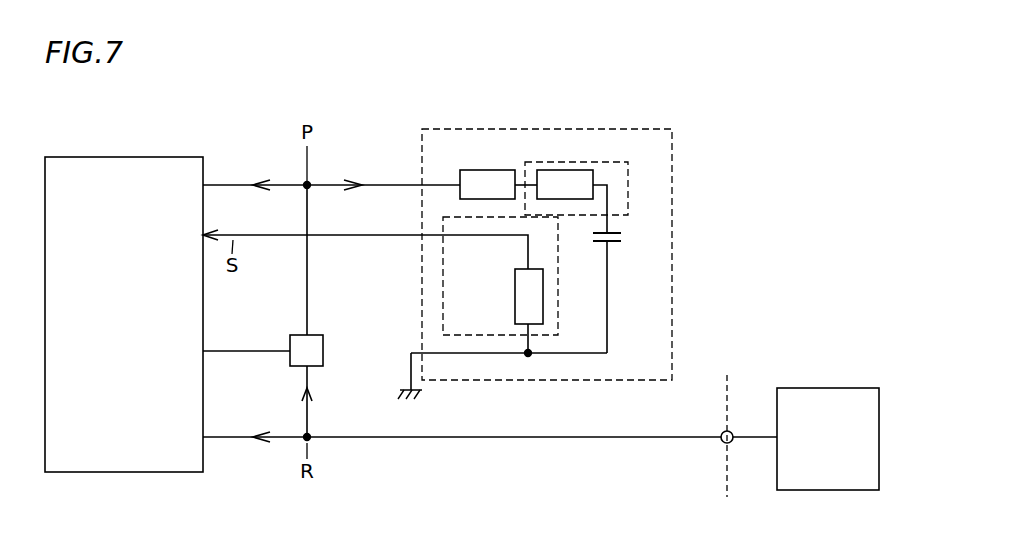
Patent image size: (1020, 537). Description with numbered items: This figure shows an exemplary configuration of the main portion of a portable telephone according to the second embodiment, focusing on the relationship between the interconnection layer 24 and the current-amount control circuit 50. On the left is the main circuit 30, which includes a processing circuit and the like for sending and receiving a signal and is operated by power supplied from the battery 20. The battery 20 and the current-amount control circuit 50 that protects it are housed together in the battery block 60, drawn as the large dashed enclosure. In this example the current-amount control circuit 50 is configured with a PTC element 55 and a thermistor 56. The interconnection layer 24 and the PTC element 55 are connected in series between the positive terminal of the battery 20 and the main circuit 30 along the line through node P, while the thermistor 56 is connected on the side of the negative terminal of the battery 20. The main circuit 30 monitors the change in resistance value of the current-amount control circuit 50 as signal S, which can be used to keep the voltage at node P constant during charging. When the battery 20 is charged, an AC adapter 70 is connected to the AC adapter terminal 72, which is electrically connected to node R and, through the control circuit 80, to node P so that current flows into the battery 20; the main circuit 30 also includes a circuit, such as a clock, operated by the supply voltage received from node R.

The main circuit 30 is at (186, 157).
The interconnection layer 24 is at (503, 170).
The PTC element 55 is at (577, 170).
The current-amount control circuit 50 is at (618, 163).
The battery block 60 is at (674, 145).
The battery 20 is at (625, 236).
The thermistor 56 is at (515, 310).
The control circuit 80 is at (324, 350).
The AC adapter terminal 72 is at (733, 432).
The AC adapter 70 is at (864, 388).